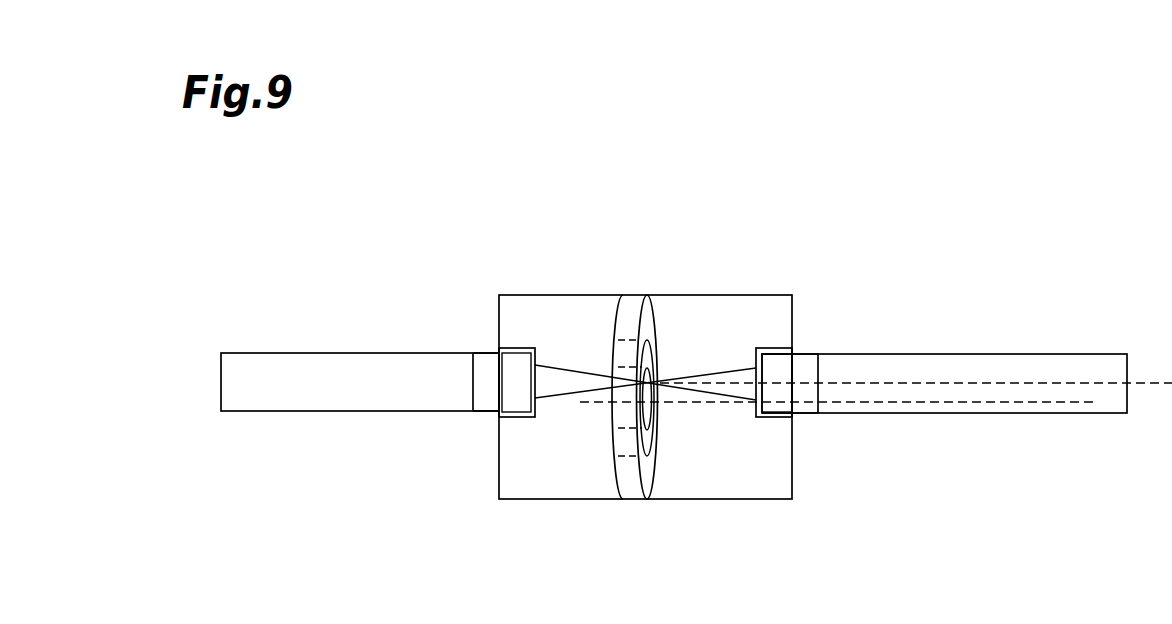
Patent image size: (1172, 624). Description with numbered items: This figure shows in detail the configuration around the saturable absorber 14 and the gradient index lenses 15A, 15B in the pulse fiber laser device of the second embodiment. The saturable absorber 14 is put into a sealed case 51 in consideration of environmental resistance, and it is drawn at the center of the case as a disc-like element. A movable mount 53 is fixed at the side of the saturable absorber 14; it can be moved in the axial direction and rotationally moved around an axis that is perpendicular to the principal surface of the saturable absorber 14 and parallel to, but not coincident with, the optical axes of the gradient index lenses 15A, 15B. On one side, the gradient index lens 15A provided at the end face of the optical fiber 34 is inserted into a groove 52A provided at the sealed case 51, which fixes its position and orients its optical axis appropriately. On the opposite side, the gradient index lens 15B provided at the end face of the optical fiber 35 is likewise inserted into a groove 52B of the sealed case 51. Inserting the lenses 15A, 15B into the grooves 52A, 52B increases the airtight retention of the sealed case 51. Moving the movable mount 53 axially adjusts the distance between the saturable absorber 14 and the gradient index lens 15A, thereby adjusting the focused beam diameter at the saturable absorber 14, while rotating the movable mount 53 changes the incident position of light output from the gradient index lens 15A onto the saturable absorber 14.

The sealed case 51 is at (579, 294).
The movable mount 53 is at (652, 482).
The saturable absorber 14 is at (648, 412).
The groove 52A is at (778, 348).
The groove 52B is at (518, 347).
The optical fiber 34 is at (1109, 399).
The optical fiber 35 is at (323, 396).
The gradient index lens 15A is at (803, 393).
The gradient index lens 15B is at (491, 396).